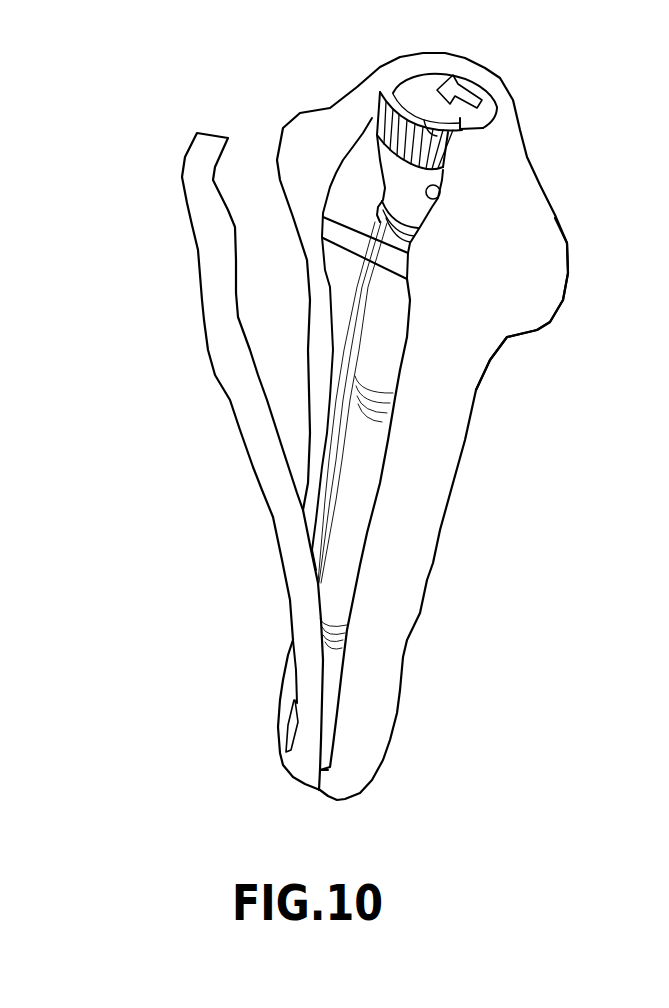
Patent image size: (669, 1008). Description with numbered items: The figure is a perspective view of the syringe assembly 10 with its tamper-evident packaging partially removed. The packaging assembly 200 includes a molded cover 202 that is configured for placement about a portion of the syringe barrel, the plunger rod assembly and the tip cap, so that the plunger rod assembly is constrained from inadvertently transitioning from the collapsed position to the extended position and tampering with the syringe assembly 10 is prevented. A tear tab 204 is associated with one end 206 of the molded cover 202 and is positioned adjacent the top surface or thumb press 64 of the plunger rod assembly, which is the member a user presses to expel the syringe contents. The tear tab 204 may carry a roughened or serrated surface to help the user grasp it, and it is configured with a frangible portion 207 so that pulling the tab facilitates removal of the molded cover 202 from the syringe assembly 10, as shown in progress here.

The syringe assembly 10 is at (461, 395).
The thumb press portion 64 is at (470, 80).
The packaging assembly 200 is at (553, 260).
The molded cover 202 is at (490, 317).
The tear tab 204 is at (193, 162).
The end of the molded cover 206 is at (457, 137).
The frangible portion 207 is at (407, 252).